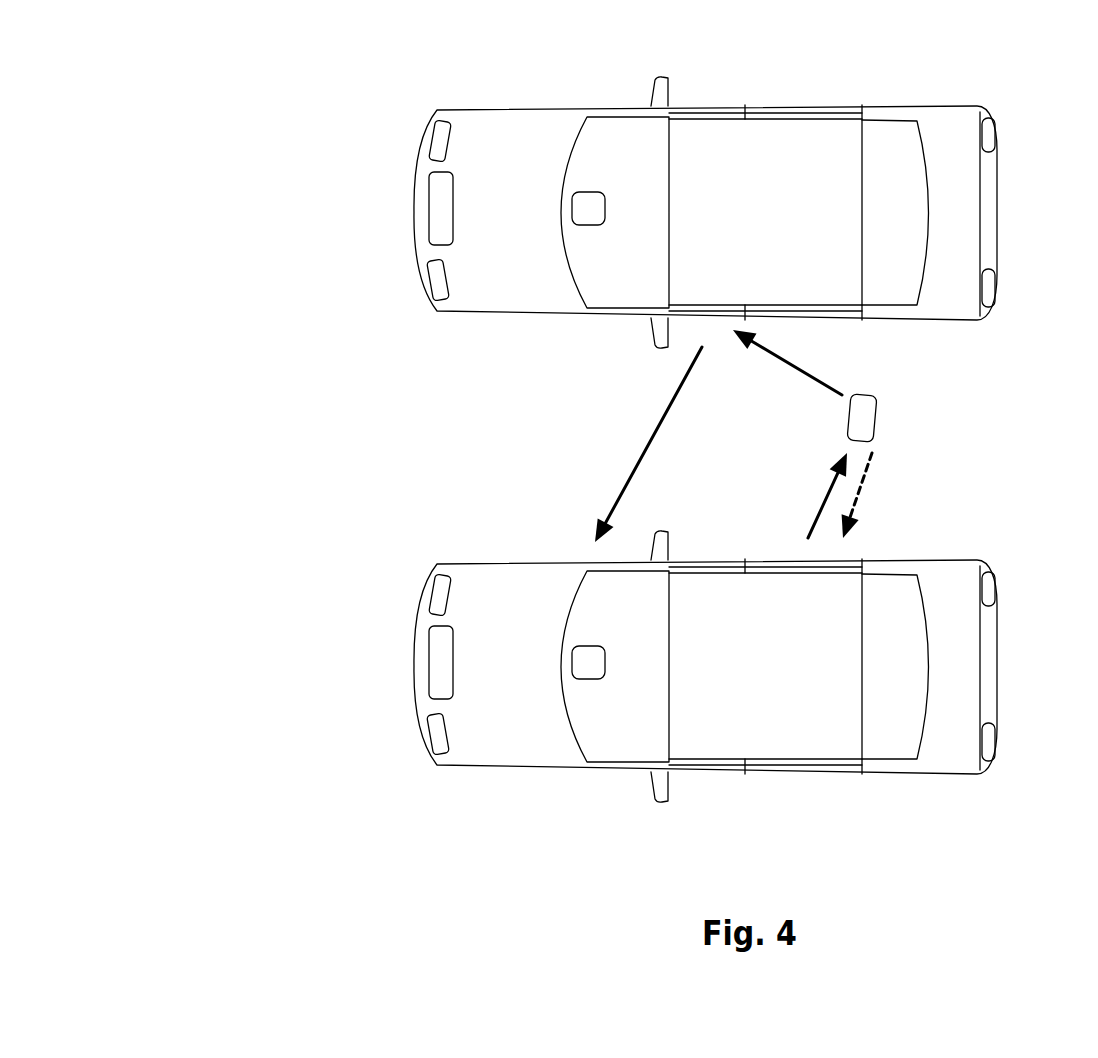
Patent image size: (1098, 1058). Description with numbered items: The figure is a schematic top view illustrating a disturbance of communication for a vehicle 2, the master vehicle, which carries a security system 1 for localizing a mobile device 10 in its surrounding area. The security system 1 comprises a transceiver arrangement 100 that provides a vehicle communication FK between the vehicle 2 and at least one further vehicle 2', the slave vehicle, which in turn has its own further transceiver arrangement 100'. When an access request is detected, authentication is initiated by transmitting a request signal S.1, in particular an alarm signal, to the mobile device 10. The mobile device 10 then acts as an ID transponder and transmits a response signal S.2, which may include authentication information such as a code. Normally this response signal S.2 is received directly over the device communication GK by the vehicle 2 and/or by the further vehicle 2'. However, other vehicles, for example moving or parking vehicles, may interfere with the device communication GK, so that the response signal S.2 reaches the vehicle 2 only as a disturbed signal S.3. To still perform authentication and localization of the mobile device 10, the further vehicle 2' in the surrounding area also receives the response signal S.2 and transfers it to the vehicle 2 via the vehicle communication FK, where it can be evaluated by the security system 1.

The security system 1 is at (111, 110).
The vehicle 2 is at (689, 648).
The further vehicle 2' is at (689, 195).
The mobile device 10 is at (878, 412).
The transceiver arrangement 100 is at (509, 732).
The further transceiver arrangement 100' is at (509, 278).
The vehicle communication FK is at (718, 436).
The request signal S.1 is at (807, 495).
The response signal S.2 is at (762, 409).
The disturbed signal S.3 is at (877, 495).
The device communication GK is at (932, 496).